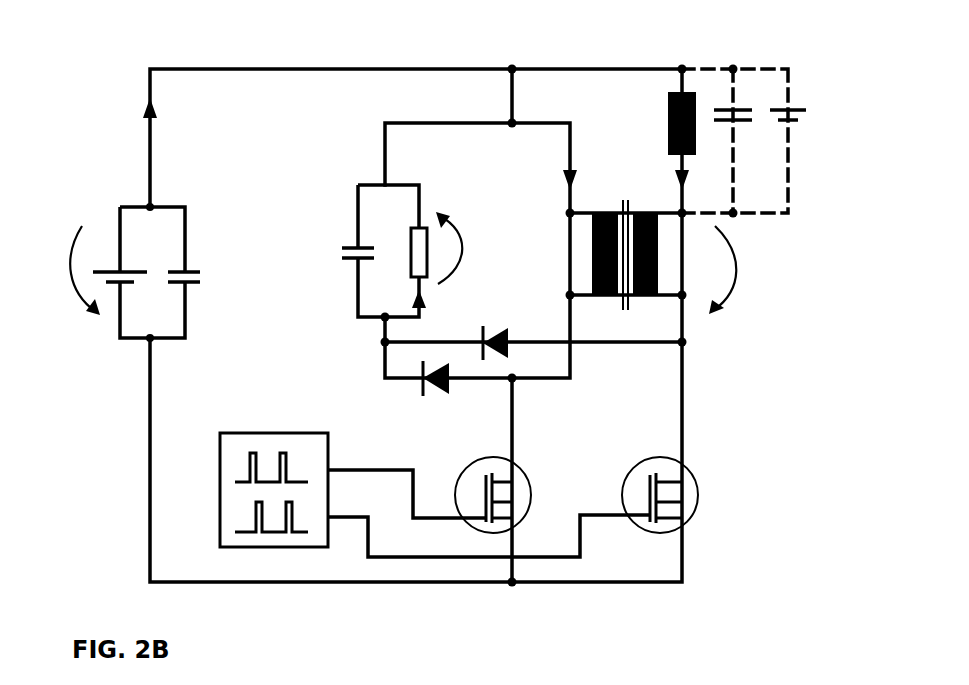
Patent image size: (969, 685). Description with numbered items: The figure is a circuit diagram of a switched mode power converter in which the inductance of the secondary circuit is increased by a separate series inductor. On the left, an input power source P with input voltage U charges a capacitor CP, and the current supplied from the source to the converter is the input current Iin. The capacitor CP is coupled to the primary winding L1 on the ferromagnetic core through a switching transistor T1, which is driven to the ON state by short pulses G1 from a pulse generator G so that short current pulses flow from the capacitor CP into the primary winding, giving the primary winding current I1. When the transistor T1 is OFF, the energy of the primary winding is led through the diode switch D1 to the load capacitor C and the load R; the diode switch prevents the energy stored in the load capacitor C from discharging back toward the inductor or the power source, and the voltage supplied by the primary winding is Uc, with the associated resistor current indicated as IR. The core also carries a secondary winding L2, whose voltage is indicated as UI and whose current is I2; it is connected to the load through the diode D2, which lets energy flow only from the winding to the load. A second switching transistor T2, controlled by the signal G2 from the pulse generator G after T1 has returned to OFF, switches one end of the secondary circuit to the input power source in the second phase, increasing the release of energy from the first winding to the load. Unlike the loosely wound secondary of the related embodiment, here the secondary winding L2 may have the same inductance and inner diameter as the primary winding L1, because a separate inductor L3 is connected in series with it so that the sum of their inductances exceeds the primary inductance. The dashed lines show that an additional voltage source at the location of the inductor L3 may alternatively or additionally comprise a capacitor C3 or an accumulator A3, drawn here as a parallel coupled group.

The input power source P is at (110, 266).
The input voltage U is at (73, 270).
The capacitor CP is at (197, 266).
The input current Iin is at (161, 110).
The load capacitor C is at (340, 258).
The load R is at (410, 252).
The voltage supplied by primary winding Uc is at (457, 248).
The resistor current IR is at (428, 301).
The diode switch D1 is at (437, 395).
The diode D2 is at (482, 325).
The primary winding L1 is at (590, 264).
The secondary winding L2 is at (664, 278).
The winding voltage UI is at (718, 270).
The current of the primary winding I1 is at (579, 180).
The second winding current I2 is at (690, 180).
The separate inductor L3 is at (668, 130).
The capacitor C3 is at (712, 110).
The accumulator A3 is at (772, 110).
The pulse generator G is at (290, 431).
The control pulse of the primary switch G1 is at (407, 483).
The control signal of the secondary switch G2 is at (489, 526).
The switching transistor T1 is at (536, 493).
The switching transistor T2 is at (647, 440).